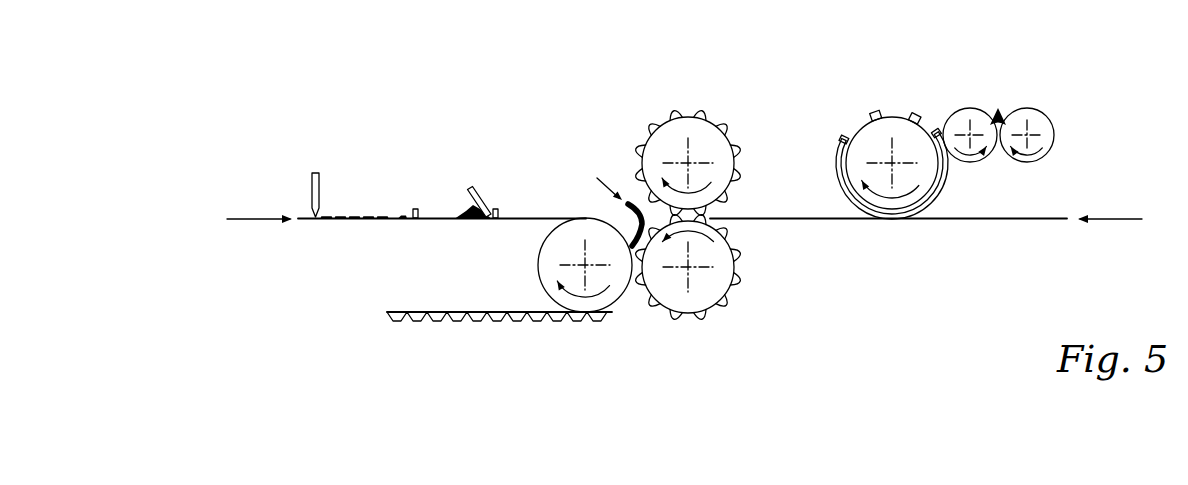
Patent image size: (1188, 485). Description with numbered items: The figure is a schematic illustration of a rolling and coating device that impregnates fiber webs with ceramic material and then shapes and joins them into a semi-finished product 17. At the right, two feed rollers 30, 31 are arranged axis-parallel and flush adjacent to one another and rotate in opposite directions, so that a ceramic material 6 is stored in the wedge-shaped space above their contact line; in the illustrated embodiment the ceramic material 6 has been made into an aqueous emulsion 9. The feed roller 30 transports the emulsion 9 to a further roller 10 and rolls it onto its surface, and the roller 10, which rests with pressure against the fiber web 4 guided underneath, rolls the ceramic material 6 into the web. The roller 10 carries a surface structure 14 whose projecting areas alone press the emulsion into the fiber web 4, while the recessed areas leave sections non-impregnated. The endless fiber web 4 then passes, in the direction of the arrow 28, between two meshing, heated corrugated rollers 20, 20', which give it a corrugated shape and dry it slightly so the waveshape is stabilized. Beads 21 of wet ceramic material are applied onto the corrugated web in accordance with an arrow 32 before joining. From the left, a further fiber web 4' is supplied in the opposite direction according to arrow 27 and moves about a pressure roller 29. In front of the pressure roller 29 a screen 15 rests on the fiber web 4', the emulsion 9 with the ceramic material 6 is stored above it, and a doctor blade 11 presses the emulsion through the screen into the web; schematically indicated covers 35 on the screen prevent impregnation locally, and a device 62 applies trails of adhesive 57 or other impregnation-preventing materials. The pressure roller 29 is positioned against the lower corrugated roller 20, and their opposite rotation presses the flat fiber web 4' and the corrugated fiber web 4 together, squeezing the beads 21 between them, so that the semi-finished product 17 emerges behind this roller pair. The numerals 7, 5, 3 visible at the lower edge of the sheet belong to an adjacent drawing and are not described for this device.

The arrow 27 is at (258, 218).
The covers 35 is at (443, 220).
The device 62 is at (311, 185).
The trails of adhesive 57 is at (370, 215).
The further fiber web 4' is at (393, 181).
The screen 15 is at (430, 216).
The aqueous emulsion 9 is at (465, 207).
The ceramic material 6 is at (467, 188).
The doctor blade 11 is at (483, 207).
The semi-finished product 17 is at (472, 325).
The pressure roller 29 is at (585, 313).
The beads 21 is at (633, 225).
The arrow 32 is at (619, 196).
The corrugated roller 20' is at (688, 139).
The corrugated roller 20 is at (699, 277).
The fiber web 4 is at (888, 249).
The roller 10 is at (862, 128).
The surface structure 14 is at (838, 152).
The feed roller 30 is at (967, 110).
The feed roller 31 is at (1050, 128).
The arrow 28 is at (1112, 220).
The element (adjacent figure) 7 is at (542, 484).
The element (adjacent figure) 5 is at (644, 484).
The element (adjacent figure) 3 is at (813, 479).